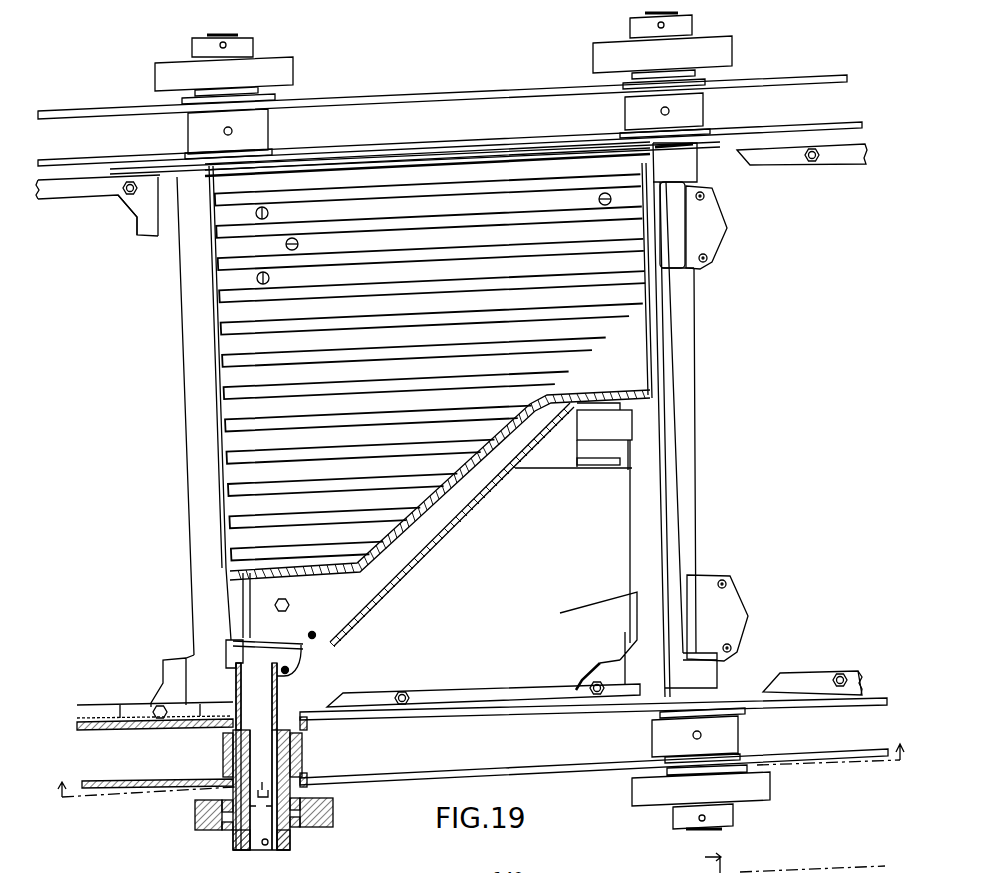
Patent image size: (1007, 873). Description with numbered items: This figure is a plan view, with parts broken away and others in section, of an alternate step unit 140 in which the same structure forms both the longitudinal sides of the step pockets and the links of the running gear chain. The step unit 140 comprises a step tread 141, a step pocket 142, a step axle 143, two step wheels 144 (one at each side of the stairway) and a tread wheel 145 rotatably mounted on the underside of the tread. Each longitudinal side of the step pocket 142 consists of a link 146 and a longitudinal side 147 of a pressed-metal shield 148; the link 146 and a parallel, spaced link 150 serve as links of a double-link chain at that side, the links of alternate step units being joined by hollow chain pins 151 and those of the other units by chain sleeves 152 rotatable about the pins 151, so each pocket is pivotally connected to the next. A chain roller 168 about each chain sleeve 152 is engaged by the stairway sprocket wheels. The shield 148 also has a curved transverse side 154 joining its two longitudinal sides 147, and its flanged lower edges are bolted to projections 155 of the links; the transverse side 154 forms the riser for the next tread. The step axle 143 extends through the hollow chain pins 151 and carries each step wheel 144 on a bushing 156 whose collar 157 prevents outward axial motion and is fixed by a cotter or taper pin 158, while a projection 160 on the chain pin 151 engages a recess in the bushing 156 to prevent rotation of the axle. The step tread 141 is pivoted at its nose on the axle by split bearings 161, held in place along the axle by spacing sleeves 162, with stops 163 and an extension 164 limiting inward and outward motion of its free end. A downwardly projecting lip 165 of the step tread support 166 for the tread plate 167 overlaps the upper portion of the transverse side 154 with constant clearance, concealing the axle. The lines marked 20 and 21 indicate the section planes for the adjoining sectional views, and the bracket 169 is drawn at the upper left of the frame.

The step unit 140 is at (446, 65).
The step tread 141 is at (667, 309).
The step pocket 142 is at (533, 703).
The step axle 143 is at (699, 465).
The step wheel 144 is at (285, 66).
The tread wheel 145 is at (573, 436).
The link 146 is at (80, 160).
The longitudinal side of shield 147 is at (40, 177).
The shield 148 is at (558, 700).
The link 150 is at (143, 112).
The hollow chain pin 151 is at (243, 742).
The chain sleeve 152 is at (223, 750).
The transverse side 154 is at (630, 527).
The projection 155 is at (860, 688).
The bushing 156 is at (245, 815).
The collar 157 is at (233, 842).
The cotter or taper pin 158 is at (265, 845).
The projection 160 is at (266, 790).
The split bearing 161 is at (727, 233).
The spacing sleeve 162 is at (277, 690).
The stop 163 is at (185, 658).
The extension 164 is at (597, 467).
The downwardly projecting lip 165 is at (230, 642).
The step tread support 166 is at (388, 587).
The tread plate 167 is at (328, 572).
The chain roller 168 is at (268, 133).
The upper bracket 169 is at (137, 227).
The section line 20 is at (484, 762).
The section line 21 is at (785, 860).